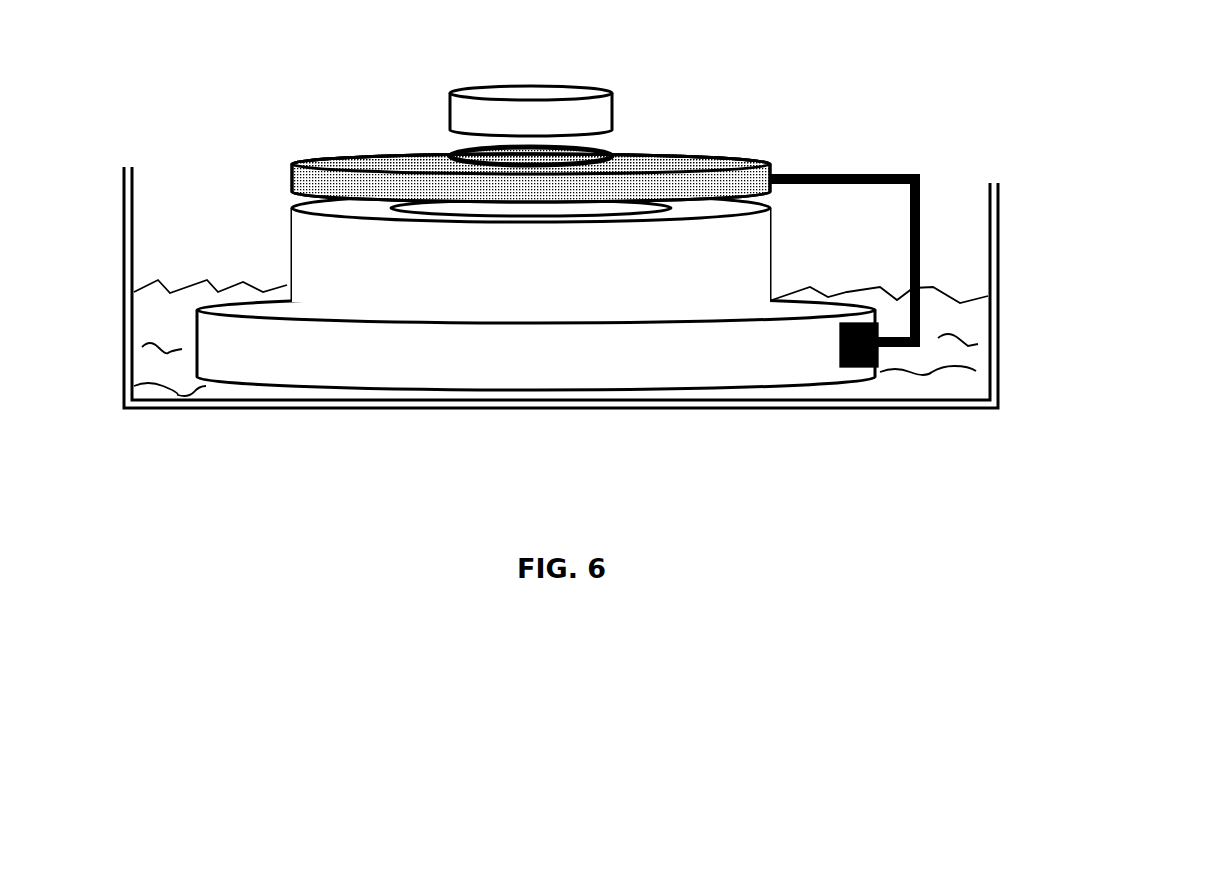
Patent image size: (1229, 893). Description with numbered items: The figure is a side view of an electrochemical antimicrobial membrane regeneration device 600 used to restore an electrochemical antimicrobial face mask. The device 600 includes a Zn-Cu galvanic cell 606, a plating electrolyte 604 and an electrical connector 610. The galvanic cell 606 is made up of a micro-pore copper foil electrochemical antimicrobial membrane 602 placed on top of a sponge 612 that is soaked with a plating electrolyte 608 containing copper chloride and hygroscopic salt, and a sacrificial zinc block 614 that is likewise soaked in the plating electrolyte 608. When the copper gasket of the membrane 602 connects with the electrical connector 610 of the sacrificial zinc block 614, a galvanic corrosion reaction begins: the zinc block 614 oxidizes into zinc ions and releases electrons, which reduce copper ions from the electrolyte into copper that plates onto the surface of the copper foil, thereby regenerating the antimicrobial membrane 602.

The electrochemical antimicrobial membrane regeneration device 600 is at (1050, 457).
The micro-pore copper foil electrochemical antimicrobial membrane 602 is at (653, 160).
The plating electrolyte 604 is at (693, 192).
The Zn-Cu galvanic cell 606 is at (898, 172).
The plating electrolyte 608 is at (160, 357).
The electrical connector 610 is at (857, 367).
The sponge 612 is at (603, 268).
The sacrificial zinc block 614 is at (403, 357).